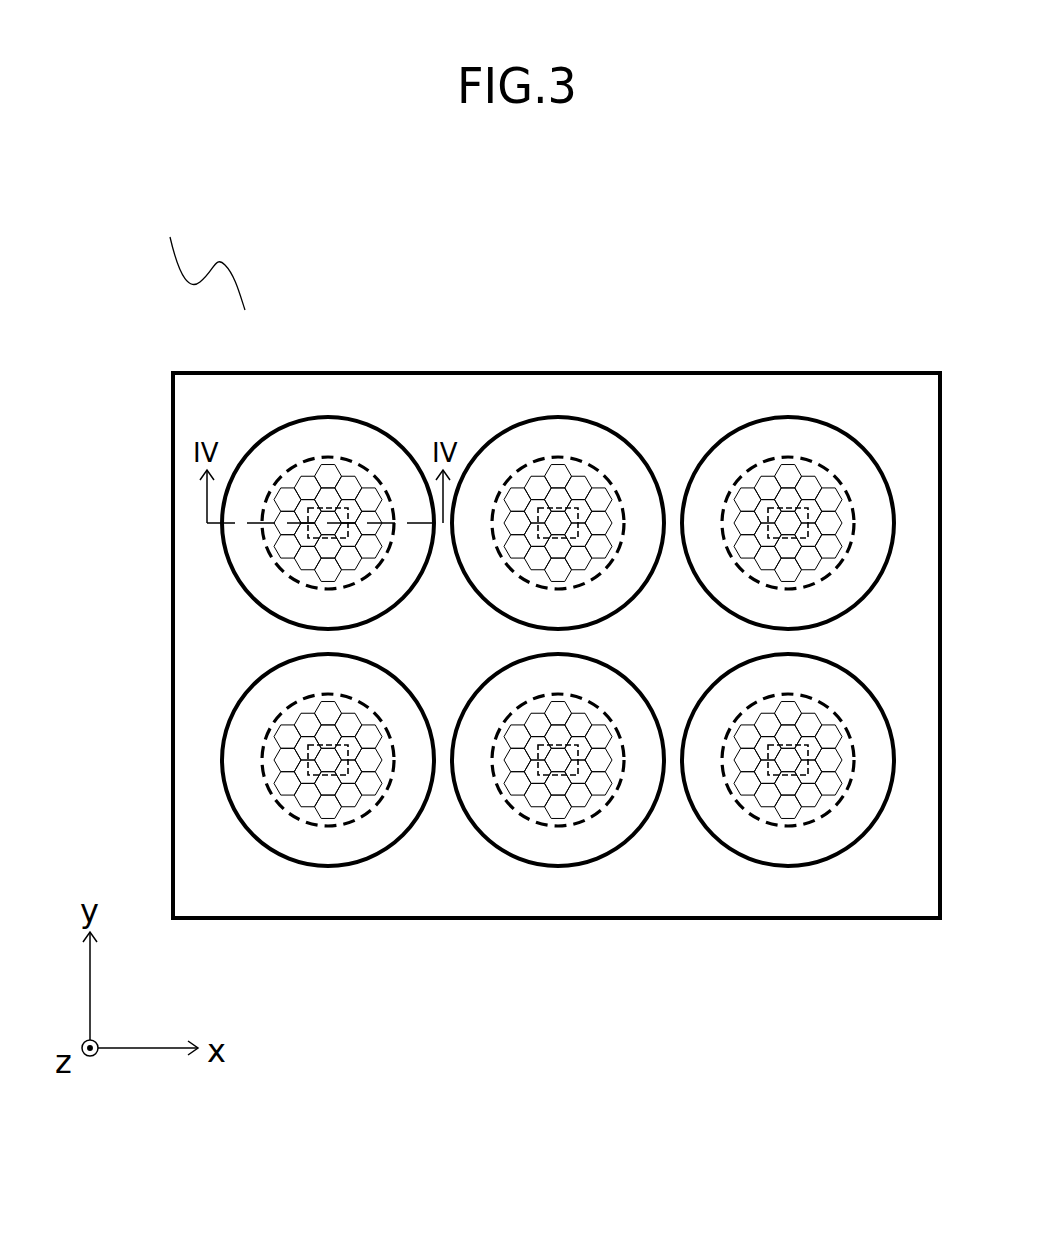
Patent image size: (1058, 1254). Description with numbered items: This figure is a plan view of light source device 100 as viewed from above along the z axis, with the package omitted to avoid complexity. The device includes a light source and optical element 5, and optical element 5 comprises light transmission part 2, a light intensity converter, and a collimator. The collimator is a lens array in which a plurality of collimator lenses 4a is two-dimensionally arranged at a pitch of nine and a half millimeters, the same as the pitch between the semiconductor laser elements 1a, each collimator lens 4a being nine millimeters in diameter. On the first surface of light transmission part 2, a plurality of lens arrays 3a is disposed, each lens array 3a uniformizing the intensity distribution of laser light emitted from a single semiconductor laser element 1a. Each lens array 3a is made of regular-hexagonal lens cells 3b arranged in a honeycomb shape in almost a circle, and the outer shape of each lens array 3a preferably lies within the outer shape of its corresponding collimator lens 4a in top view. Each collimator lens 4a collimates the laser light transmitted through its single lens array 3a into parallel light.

The light source device 100 is at (198, 236).
The light transmission part 2 is at (202, 416).
The optical element 5 is at (173, 635).
The semiconductor laser element 1a is at (312, 518).
The lens array 3a is at (340, 460).
The lens cell 3b is at (307, 488).
The collimator lens 4a is at (365, 425).